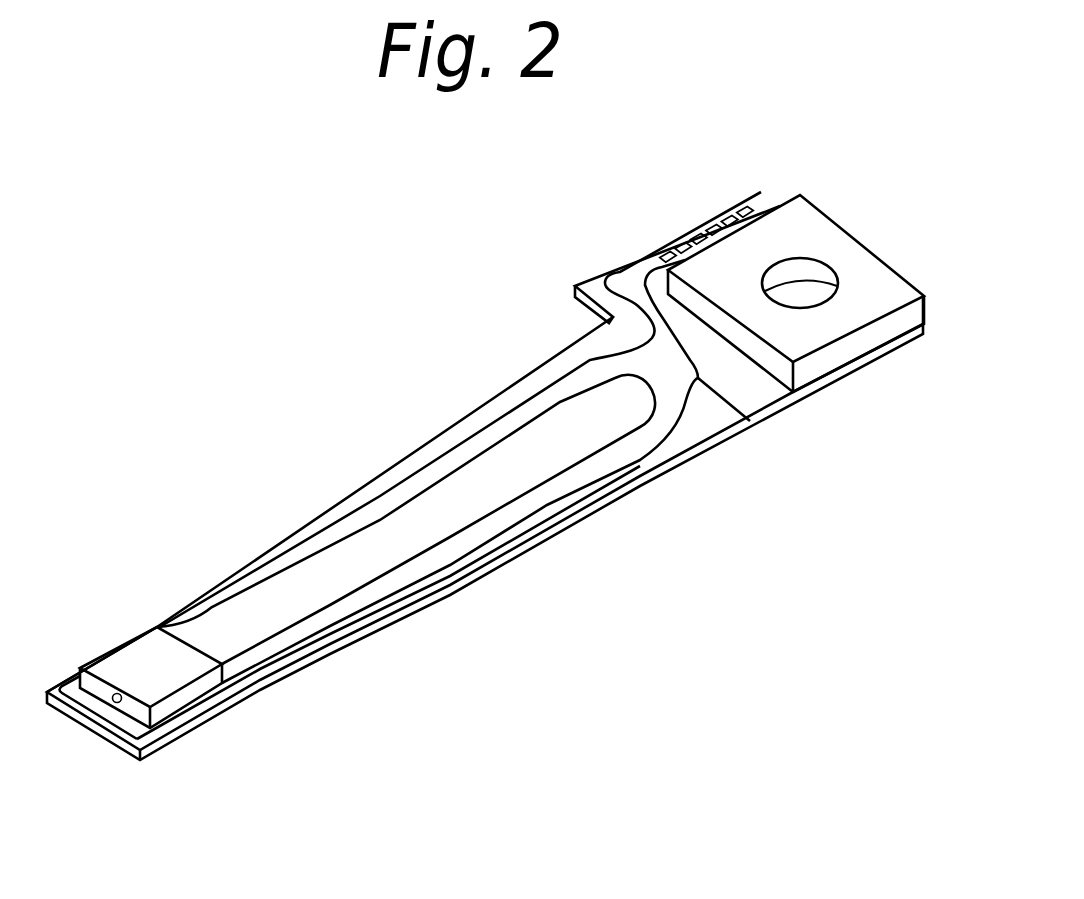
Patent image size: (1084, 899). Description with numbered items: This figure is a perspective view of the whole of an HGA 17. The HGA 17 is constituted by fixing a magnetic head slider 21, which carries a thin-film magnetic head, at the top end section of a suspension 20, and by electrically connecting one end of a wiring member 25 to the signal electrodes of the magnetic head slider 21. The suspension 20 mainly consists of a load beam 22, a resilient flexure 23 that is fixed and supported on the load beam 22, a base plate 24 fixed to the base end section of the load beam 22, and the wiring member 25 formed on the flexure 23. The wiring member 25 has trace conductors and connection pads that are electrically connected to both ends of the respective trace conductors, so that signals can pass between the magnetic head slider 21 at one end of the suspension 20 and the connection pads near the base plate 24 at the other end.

The HGA 17 is at (501, 324).
The suspension 20 is at (948, 433).
The magnetic head slider 21 is at (125, 670).
The load beam 22 is at (703, 420).
The resilient flexure 23 is at (587, 435).
The base plate 24 is at (863, 312).
The wiring member 25 is at (407, 571).